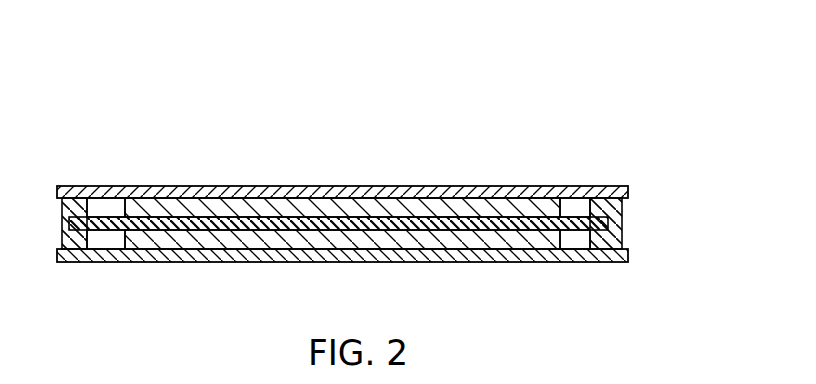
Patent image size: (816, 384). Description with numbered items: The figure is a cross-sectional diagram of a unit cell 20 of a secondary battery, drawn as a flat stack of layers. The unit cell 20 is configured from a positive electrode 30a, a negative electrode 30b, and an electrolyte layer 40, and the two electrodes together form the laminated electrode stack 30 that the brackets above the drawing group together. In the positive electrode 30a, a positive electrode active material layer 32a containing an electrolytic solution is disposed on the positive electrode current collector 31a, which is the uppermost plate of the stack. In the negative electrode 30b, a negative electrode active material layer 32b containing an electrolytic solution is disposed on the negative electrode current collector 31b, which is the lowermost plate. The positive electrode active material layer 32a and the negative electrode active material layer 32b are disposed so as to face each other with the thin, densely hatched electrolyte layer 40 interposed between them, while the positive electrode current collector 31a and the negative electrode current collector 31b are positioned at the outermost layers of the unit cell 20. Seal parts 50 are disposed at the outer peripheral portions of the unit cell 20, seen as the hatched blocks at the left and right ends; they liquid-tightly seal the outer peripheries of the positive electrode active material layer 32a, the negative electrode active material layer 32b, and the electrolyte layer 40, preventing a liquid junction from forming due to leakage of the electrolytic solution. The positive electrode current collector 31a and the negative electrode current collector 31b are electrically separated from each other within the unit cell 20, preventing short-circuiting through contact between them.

The unit cell 20 is at (90, 48).
The laminate 30 is at (427, 64).
The positive electrode 30a is at (313, 99).
The negative electrode 30b is at (442, 99).
The positive electrode current collector 31a is at (253, 193).
The positive electrode active material layer 32a is at (312, 211).
The negative electrode active material layer 32b is at (373, 241).
The negative electrode current collector 31b is at (420, 254).
The electrolyte layer 40 is at (532, 216).
The seal parts 50 is at (88, 191).